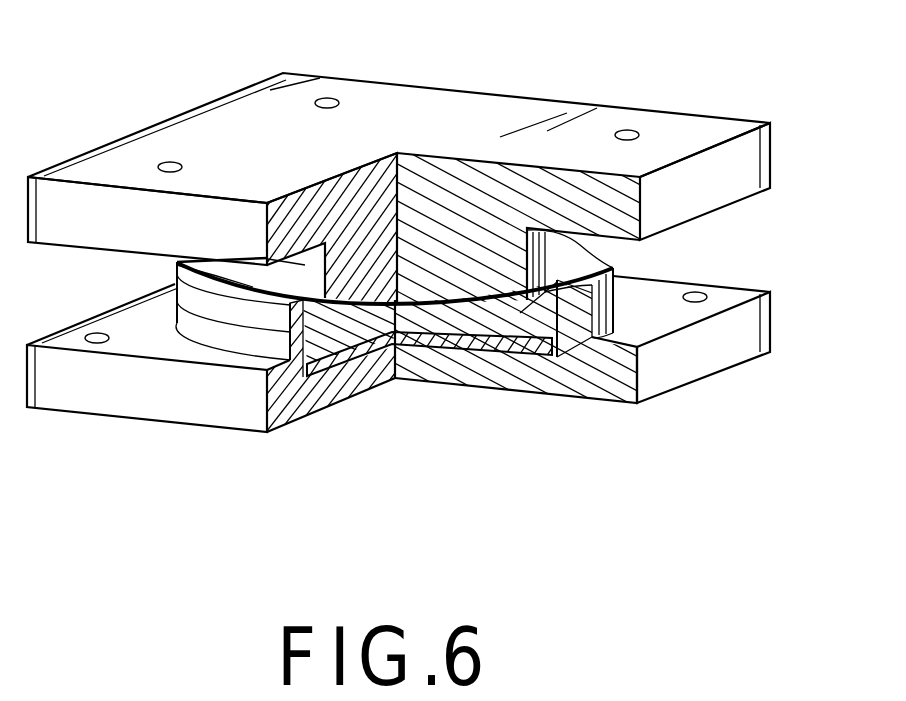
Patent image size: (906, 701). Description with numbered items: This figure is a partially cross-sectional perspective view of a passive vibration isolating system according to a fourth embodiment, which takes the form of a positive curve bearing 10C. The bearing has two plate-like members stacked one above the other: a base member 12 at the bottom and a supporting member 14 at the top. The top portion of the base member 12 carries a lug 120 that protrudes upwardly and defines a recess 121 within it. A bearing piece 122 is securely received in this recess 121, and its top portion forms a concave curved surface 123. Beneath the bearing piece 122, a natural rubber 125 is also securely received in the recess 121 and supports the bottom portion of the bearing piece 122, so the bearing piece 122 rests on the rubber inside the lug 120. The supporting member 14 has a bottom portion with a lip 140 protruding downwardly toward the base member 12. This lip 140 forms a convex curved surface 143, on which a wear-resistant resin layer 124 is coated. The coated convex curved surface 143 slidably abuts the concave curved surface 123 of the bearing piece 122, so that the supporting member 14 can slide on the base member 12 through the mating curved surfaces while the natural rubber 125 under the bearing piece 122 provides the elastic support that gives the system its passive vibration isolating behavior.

The positive curve bearing 10C is at (690, 255).
The base member 12 is at (684, 365).
The supporting member 14 is at (697, 180).
The lug 120 is at (578, 313).
The recess 121 is at (548, 318).
The bearing piece 122 is at (320, 398).
The concave curved surface 123 is at (360, 385).
The wear-resistant resin layer 124 is at (615, 272).
The natural rubber 125 is at (415, 365).
The lip 140 is at (487, 248).
The convex curved surface 143 is at (433, 296).